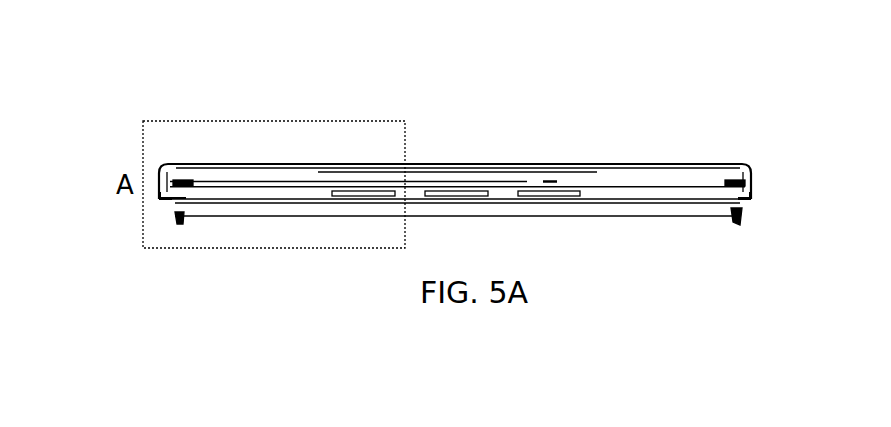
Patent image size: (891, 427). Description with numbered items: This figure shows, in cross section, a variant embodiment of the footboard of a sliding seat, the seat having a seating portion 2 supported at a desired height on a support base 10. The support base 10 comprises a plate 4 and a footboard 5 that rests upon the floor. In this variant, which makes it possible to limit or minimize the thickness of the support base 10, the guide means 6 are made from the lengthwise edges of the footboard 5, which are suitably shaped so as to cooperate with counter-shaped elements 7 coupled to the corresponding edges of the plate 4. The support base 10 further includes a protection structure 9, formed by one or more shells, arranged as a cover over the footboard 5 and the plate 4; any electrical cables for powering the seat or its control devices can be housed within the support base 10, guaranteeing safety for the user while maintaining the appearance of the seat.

The support base 10 is at (782, 113).
The protection structure 9 is at (608, 164).
The plate 4 is at (302, 178).
The seating portion 2 is at (457, 228).
The counter-shaped elements 7 is at (180, 166).
The guide means 6 is at (163, 200).
The footboard 5 is at (205, 203).